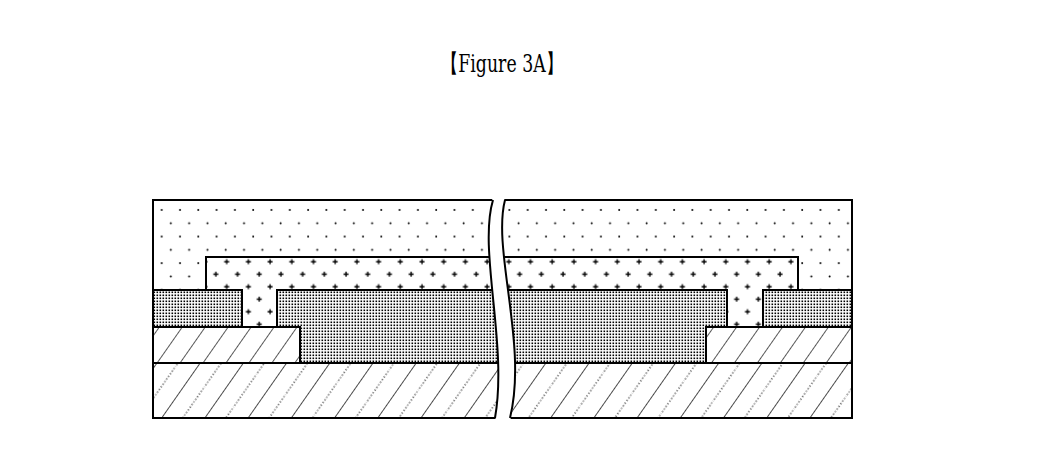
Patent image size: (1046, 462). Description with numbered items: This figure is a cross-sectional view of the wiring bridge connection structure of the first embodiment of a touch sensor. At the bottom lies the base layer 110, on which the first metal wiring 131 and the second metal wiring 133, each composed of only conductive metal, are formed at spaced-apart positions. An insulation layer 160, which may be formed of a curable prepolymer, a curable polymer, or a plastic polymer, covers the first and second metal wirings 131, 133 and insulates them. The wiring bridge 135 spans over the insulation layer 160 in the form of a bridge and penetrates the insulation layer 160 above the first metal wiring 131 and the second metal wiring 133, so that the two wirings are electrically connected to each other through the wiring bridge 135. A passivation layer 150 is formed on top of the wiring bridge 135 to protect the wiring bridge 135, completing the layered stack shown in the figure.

The base layer 110 is at (853, 395).
The first metal wiring 131 is at (853, 345).
The second metal wiring 133 is at (152, 345).
The wiring bridge 135 is at (697, 268).
The passivation layer 150 is at (318, 198).
The insulation layer 160 is at (603, 293).